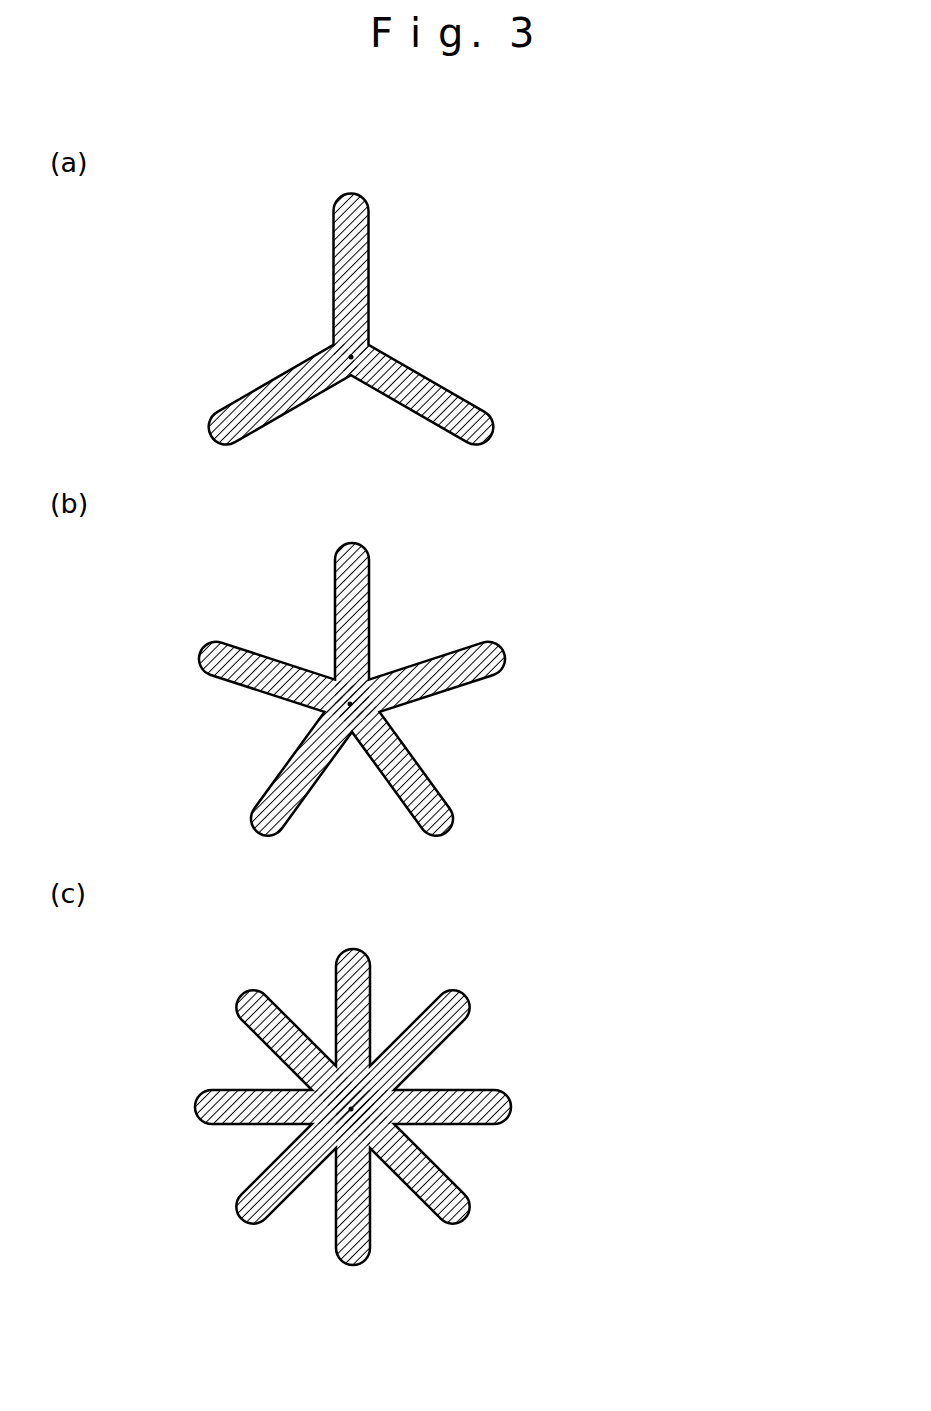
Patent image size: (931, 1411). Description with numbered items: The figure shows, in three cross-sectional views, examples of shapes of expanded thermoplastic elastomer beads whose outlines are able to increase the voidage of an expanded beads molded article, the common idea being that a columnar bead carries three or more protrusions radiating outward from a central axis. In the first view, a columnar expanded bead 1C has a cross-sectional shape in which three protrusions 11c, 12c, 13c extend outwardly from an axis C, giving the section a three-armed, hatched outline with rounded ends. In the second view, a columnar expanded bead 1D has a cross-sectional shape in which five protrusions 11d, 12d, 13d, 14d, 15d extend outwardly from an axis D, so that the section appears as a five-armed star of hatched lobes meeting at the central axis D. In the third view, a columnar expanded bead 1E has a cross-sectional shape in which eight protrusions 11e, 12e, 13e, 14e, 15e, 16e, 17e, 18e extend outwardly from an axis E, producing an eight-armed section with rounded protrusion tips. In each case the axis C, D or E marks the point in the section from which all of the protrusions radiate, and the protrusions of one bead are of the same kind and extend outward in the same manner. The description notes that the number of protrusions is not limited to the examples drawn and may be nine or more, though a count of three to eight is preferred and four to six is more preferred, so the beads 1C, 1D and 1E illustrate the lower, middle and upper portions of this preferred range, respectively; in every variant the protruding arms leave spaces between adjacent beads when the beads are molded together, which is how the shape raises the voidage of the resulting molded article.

The columnar expanded bead 1C is at (432, 222).
The protrusion 11c is at (367, 233).
The protrusion 12c is at (445, 403).
The protrusion 13c is at (240, 415).
The axis C is at (351, 357).
The columnar expanded bead 1D is at (445, 573).
The protrusion 11d is at (370, 587).
The protrusion 12d is at (493, 655).
The protrusion 13d is at (440, 792).
The protrusion 14d is at (287, 782).
The protrusion 15d is at (220, 672).
The axis D is at (350, 704).
The columnar expanded bead 1E is at (510, 1010).
The protrusion 11e is at (371, 968).
The protrusion 12e is at (461, 1023).
The protrusion 13e is at (505, 1100).
The protrusion 14e is at (466, 1200).
The protrusion 15e is at (371, 1241).
The protrusion 16e is at (245, 1211).
The protrusion 17e is at (197, 1108).
The protrusion 18e is at (235, 1020).
The axis E is at (351, 1109).